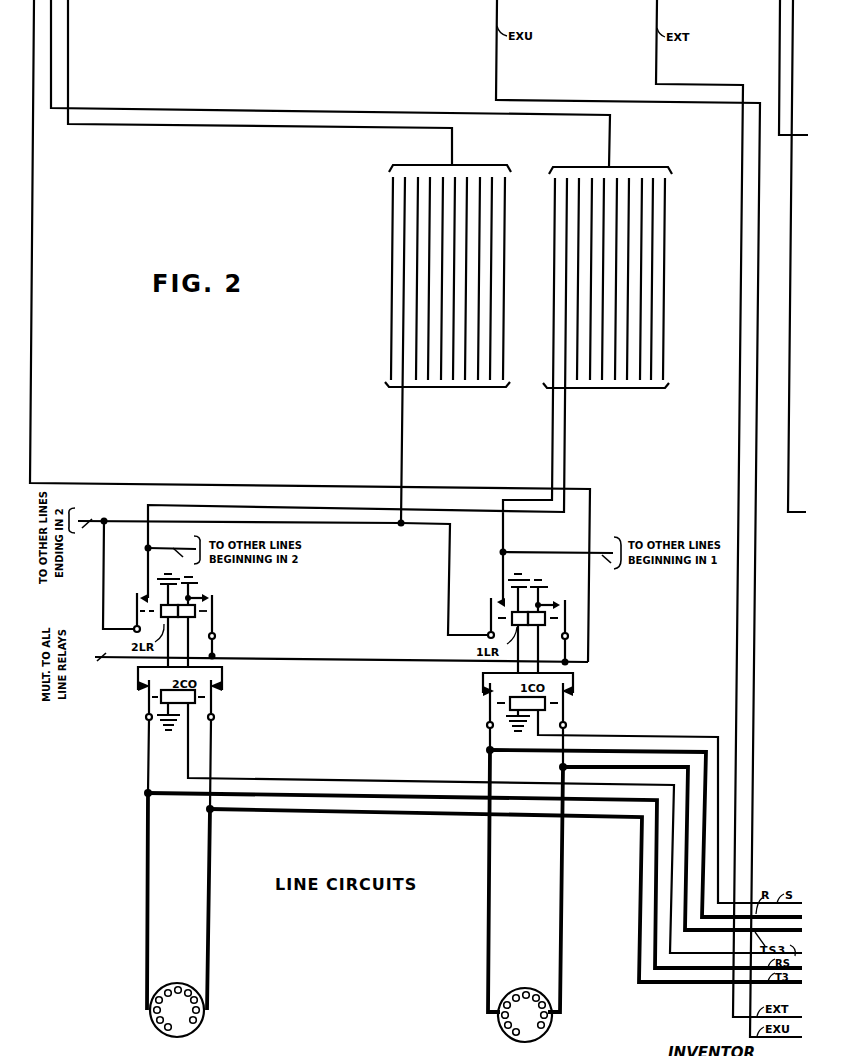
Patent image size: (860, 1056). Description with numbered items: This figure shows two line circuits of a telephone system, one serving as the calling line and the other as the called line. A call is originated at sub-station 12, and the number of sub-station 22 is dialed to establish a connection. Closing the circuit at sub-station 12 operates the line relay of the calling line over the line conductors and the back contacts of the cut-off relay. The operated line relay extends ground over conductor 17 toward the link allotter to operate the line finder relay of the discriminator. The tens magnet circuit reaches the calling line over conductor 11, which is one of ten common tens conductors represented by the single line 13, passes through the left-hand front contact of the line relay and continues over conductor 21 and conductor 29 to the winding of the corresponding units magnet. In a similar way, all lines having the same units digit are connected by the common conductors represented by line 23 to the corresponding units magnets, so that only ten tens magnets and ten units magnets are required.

The conductor 17 is at (34, 12).
The single line representing ten common tens conductors 13 is at (51, 12).
The line representing common units conductors 23 is at (68, 12).
The conductor 21 is at (404, 201).
The conductor 11 is at (566, 203).
The conductor 29 is at (779, 41).
The sub-station 22 is at (156, 991).
The sub-station 12 is at (505, 998).